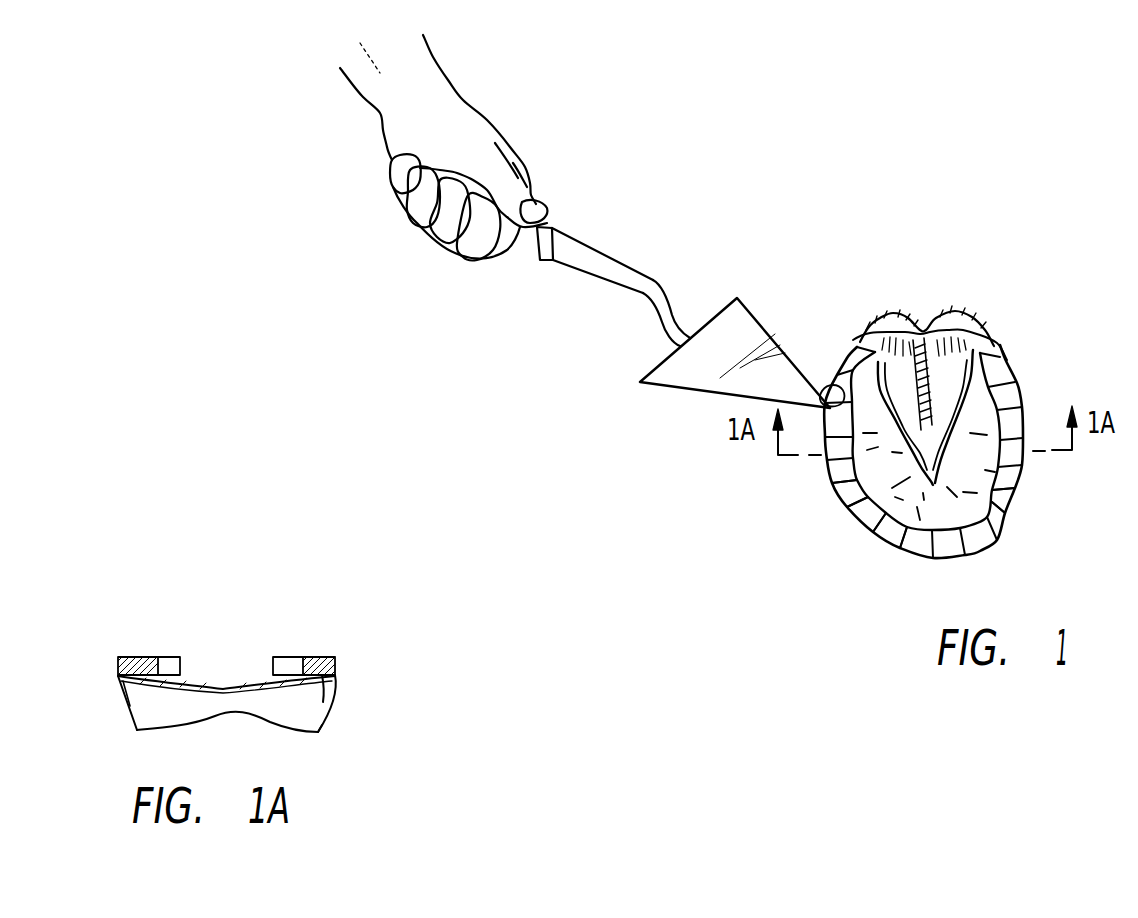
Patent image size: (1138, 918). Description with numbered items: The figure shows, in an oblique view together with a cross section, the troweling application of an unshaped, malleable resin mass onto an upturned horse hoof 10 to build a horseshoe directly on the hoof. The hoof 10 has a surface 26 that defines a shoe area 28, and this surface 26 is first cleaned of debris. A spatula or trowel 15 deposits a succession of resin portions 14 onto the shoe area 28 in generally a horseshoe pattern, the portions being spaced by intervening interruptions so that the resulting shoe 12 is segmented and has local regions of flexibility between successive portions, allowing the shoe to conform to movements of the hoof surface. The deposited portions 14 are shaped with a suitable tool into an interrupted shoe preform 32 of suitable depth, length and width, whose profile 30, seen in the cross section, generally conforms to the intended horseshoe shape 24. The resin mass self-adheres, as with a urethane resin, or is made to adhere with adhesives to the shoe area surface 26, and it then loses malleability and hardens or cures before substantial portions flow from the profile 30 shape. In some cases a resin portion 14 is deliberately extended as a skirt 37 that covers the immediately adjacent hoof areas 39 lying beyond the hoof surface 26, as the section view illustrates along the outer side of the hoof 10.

In FIG. 1, the hoof 10 is at (966, 328).
In FIG. 1A, the hoof 10 is at (310, 712).
In FIG. 1, the shoe 12 is at (1020, 360).
In FIG. 1, the resin portions 14 is at (1005, 490).
In FIG. 1, the trowel 15 is at (730, 318).
In FIG. 1, the intended shape 24 is at (1000, 522).
In FIG. 1A, the intended shape 24 is at (341, 670).
In FIG. 1, the surface 26 is at (898, 535).
In FIG. 1A, the surface 26 is at (322, 699).
In FIG. 1, the shoe area 28 is at (833, 387).
In FIG. 1A, the shoe area 28 is at (117, 677).
In FIG. 1A, the profile 30 is at (310, 653).
In FIG. 1, the interrupted shoe preform 32 is at (847, 512).
In FIG. 1A, the interrupted shoe preform 32 is at (167, 643).
In FIG. 1A, the skirt 37 is at (121, 697).
In FIG. 1A, the adjacent hoof areas 39 is at (320, 727).